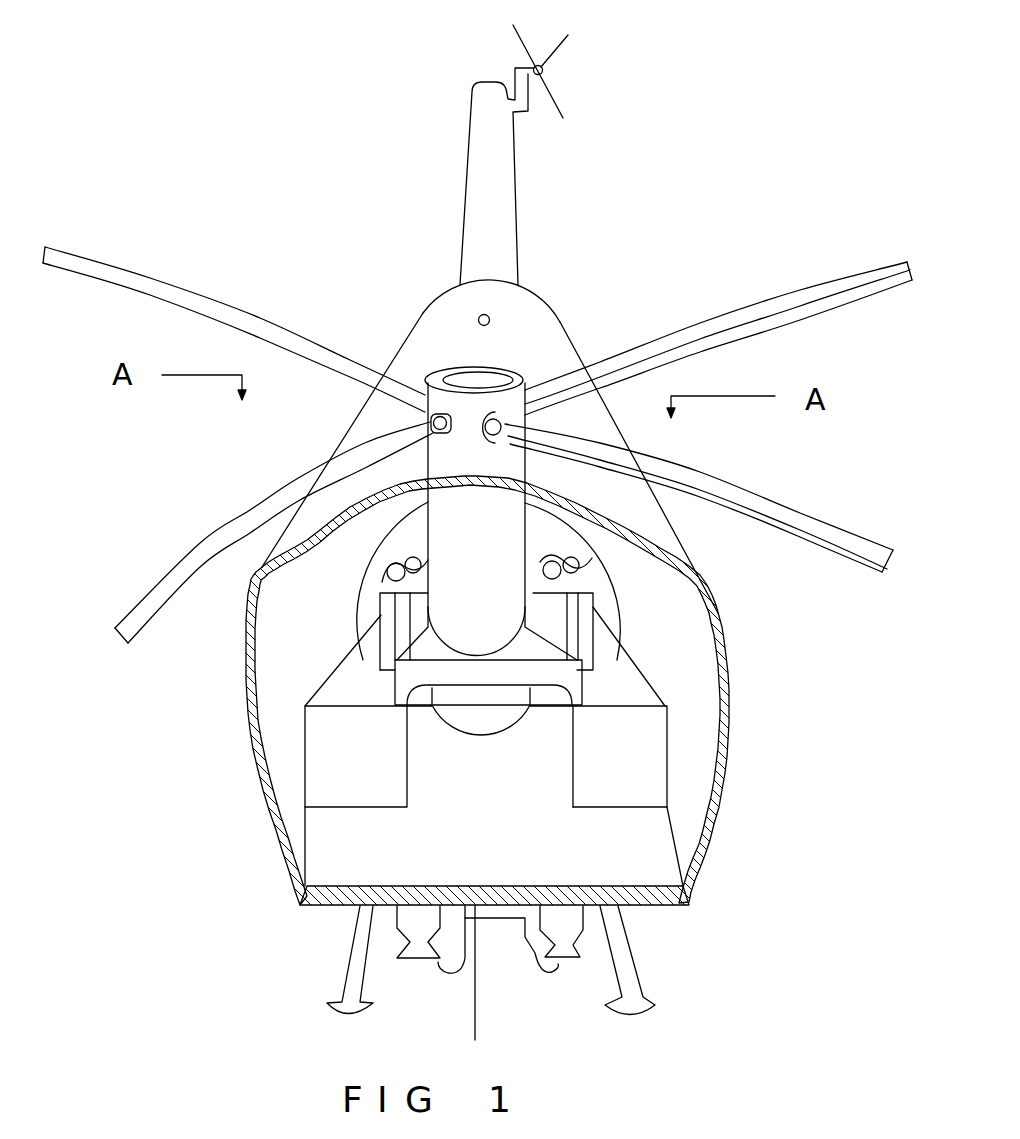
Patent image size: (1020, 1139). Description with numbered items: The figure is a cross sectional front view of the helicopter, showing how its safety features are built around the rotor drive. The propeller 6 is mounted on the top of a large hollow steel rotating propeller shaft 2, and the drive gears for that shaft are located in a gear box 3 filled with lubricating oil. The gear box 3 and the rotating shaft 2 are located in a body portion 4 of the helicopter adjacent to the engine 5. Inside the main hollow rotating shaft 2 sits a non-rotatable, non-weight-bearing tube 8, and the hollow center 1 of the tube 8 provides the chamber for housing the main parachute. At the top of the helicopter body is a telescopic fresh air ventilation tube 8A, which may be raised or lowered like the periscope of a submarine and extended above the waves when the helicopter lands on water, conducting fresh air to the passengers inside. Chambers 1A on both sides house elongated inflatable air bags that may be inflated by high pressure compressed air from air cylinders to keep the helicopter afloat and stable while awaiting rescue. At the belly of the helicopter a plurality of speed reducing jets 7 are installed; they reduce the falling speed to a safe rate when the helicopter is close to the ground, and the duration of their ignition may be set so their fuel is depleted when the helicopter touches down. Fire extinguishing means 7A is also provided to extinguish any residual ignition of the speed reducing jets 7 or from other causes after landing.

The hollow center 1 is at (455, 372).
The chambers 1A is at (340, 750).
The propeller shaft 2 is at (527, 374).
The gear box 3 is at (577, 680).
The body portion 4 is at (730, 735).
The engine 5 is at (390, 637).
The propeller 6 is at (270, 507).
The speed reducing jets 7 is at (567, 953).
The fire extinguishing means 7A is at (498, 976).
The tube 8 is at (508, 370).
The fresh air ventilation tube 8A is at (479, 316).